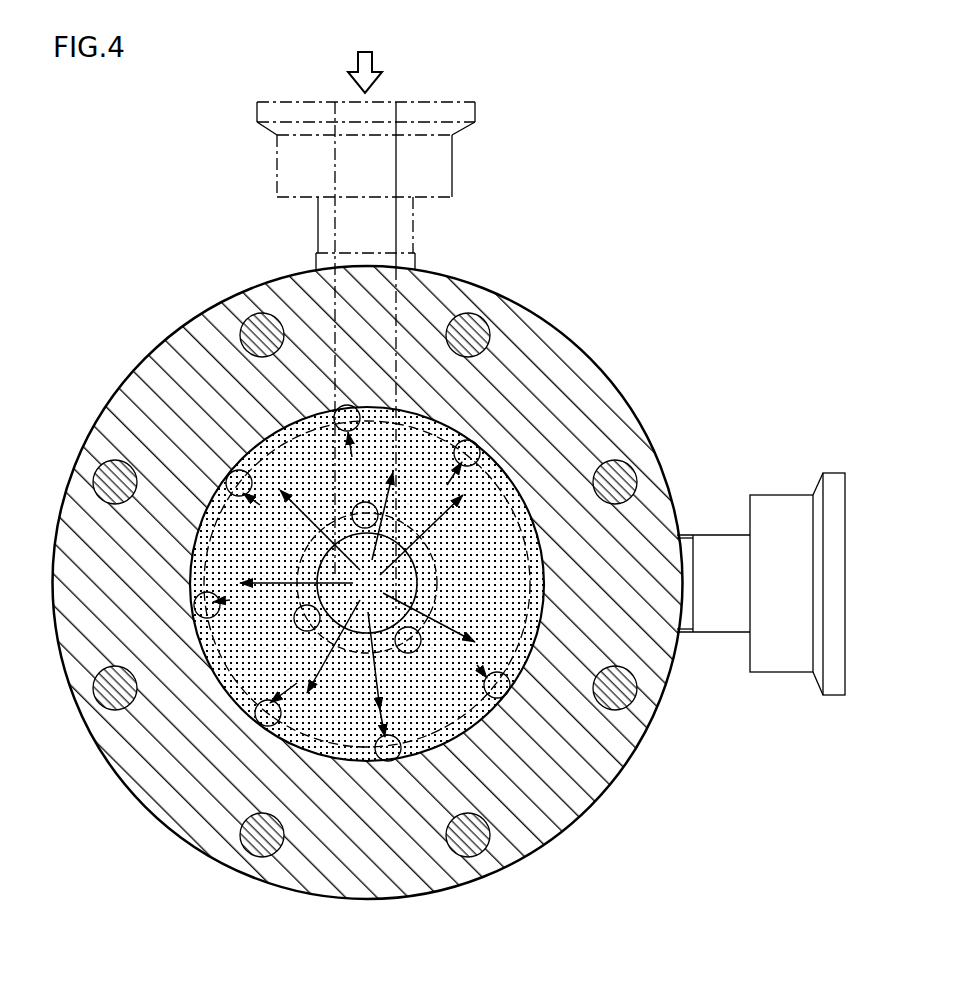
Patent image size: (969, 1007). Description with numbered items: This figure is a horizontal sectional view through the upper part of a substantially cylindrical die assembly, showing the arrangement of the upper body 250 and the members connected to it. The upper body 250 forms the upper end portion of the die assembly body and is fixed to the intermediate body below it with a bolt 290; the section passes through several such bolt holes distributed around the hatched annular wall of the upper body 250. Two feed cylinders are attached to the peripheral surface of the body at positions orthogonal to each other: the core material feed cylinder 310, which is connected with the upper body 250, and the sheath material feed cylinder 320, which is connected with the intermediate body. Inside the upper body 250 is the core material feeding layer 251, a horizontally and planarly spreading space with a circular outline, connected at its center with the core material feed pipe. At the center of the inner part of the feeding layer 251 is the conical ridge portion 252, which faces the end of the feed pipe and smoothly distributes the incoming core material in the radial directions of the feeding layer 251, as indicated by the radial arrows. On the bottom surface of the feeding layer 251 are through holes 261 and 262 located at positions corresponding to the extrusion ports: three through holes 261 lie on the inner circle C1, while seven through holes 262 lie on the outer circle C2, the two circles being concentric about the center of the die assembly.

The upper body 250 is at (523, 838).
The core material feeding layer 251 is at (513, 518).
The conical ridge portion 252 is at (488, 545).
The through holes 261 is at (293, 630).
The through holes 262 is at (372, 610).
The bolt 290 is at (473, 835).
The core material feed cylinder 310 is at (413, 225).
The sheath material feed cylinder 320 is at (782, 508).
The inner circle C1 is at (360, 603).
The outer circle C2 is at (507, 628).